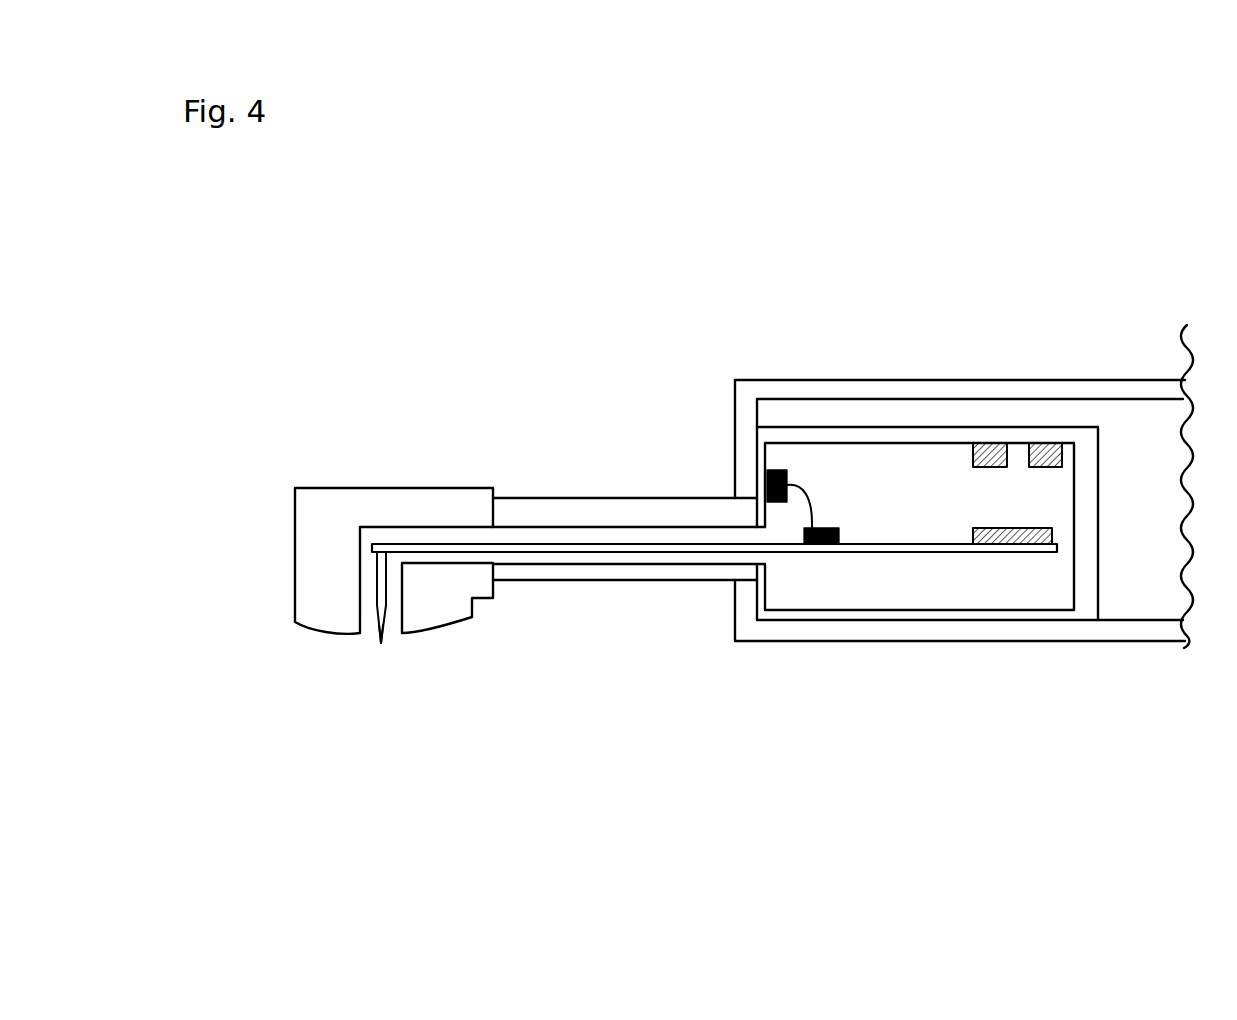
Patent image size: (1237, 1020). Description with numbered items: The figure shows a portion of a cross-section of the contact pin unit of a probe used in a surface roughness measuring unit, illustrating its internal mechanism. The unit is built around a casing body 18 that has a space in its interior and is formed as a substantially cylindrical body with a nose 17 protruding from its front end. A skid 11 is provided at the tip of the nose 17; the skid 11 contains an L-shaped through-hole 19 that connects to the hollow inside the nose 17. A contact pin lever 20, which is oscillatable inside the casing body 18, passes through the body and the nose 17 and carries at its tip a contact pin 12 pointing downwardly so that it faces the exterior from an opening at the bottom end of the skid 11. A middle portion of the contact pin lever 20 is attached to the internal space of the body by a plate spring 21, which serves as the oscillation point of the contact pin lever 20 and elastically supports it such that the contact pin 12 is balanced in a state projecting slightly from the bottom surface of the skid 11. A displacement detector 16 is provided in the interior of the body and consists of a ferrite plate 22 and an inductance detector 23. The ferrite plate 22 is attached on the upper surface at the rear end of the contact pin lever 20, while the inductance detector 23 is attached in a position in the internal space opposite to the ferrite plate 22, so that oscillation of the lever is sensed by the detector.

The skid 11 is at (417, 483).
The contact pin 12 is at (377, 635).
The displacement detector 16 is at (959, 518).
The nose 17 is at (623, 582).
The casing body 18 is at (827, 643).
The through-hole 19 is at (383, 638).
The contact pin lever 20 is at (553, 547).
The plate spring 21 is at (818, 500).
The ferrite plate 22 is at (1030, 545).
The inductance detector 23 is at (1000, 443).